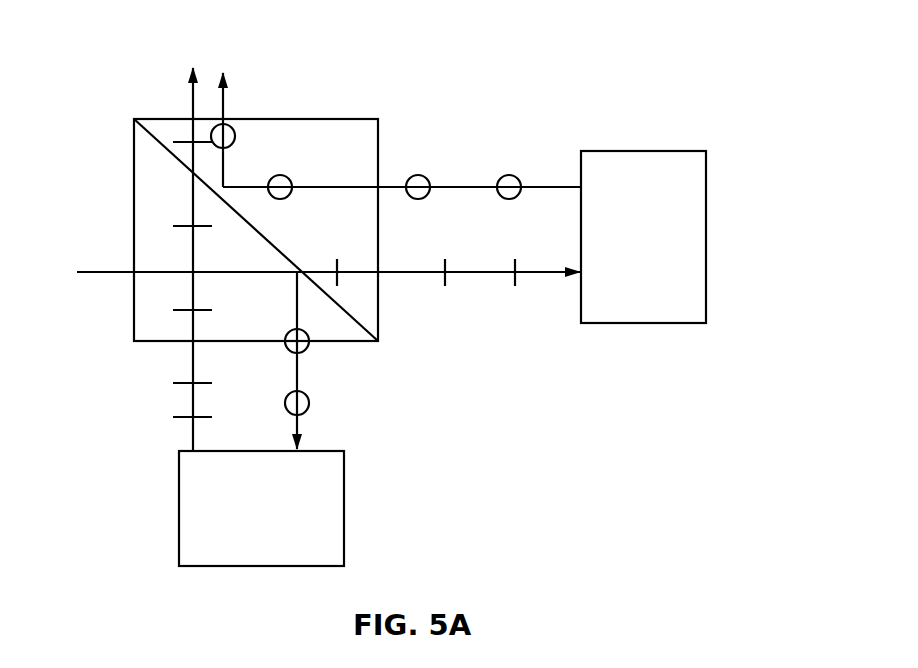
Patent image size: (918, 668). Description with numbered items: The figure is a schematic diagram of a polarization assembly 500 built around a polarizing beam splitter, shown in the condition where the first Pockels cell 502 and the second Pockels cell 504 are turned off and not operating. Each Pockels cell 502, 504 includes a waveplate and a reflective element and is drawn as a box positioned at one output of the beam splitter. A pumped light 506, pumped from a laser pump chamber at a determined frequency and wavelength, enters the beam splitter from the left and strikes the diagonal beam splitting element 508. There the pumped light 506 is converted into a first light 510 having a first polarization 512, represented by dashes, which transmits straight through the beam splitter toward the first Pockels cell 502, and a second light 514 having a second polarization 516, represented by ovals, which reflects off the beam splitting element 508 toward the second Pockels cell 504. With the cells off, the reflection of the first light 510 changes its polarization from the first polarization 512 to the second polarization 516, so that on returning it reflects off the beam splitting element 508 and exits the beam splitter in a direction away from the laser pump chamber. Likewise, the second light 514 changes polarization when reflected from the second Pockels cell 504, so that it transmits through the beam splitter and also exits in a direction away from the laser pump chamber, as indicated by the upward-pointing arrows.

The polarization assembly 500 is at (528, 49).
The first Pockels cell 502 is at (332, 118).
The second Pockels cell 504 is at (345, 482).
The pumped light 506 is at (98, 270).
The beam splitting element 508 is at (274, 249).
The first light 510 is at (382, 270).
The first polarization 512 is at (450, 270).
The second light 514 is at (300, 312).
The second polarization 516 is at (309, 400).